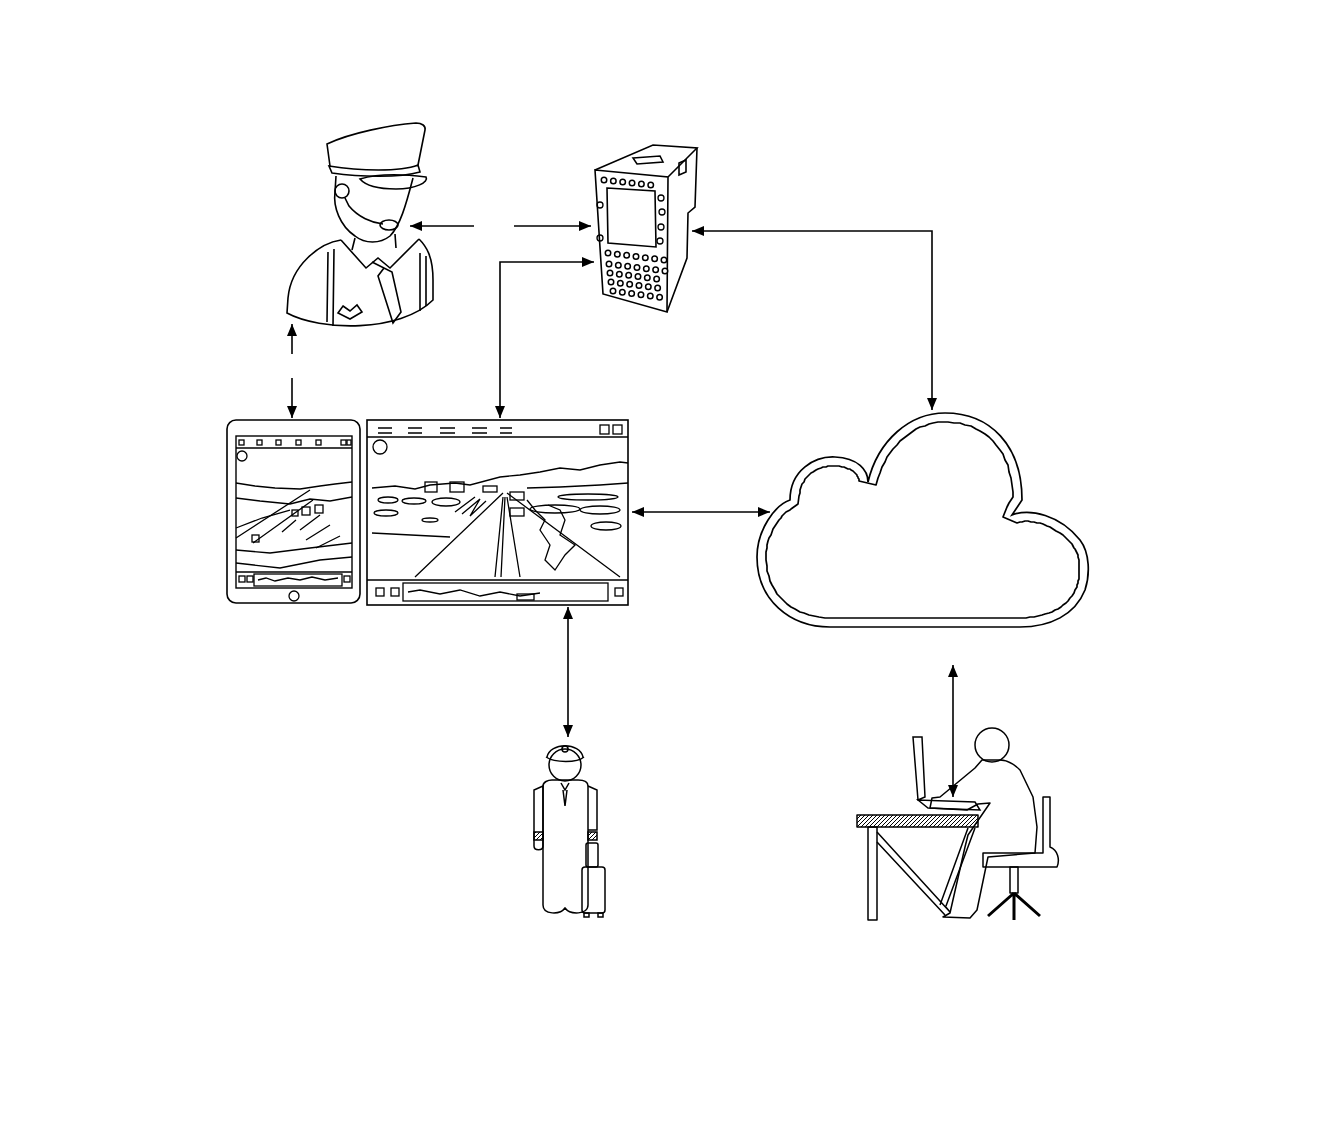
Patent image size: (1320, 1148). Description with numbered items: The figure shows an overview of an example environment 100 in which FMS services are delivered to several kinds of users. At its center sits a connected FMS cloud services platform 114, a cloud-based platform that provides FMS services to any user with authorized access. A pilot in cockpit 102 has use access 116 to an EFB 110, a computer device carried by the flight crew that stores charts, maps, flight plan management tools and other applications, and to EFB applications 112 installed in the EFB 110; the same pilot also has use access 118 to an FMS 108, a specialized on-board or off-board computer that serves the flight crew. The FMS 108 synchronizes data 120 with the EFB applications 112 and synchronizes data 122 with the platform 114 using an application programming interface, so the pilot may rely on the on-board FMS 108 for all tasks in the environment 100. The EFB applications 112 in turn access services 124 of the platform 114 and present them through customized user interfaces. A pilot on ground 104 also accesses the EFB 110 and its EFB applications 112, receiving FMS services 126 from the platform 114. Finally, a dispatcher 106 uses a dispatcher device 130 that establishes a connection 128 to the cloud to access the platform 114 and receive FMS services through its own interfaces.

The environment 100 is at (958, 116).
The pilot in cockpit 102 is at (330, 190).
The pilot on ground 104 is at (600, 805).
The dispatcher 106 is at (1033, 792).
The flight management system 108 is at (698, 176).
The electronic flight bag 110 is at (228, 519).
The EFB applications 112 is at (400, 607).
The connected FMS cloud services platform 114 is at (1012, 445).
The use access 116 is at (291, 337).
The use access 118 is at (557, 223).
The data synchronization 120 is at (500, 356).
The data synchronization 122 is at (933, 304).
The communication 124 is at (701, 511).
The FMS services 126 is at (570, 686).
The connection 128 is at (955, 702).
The dispatcher device 130 is at (913, 742).